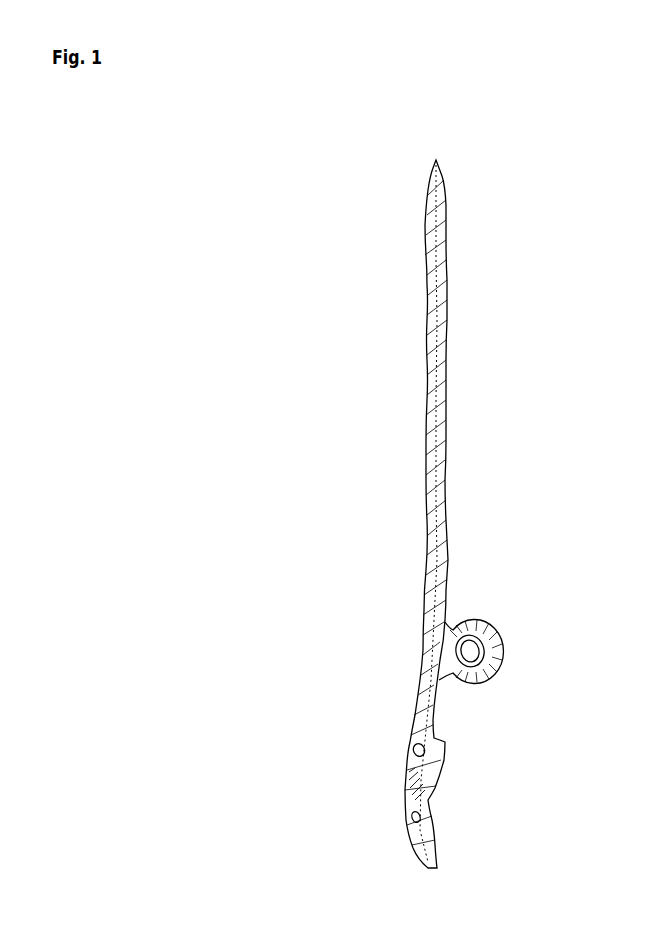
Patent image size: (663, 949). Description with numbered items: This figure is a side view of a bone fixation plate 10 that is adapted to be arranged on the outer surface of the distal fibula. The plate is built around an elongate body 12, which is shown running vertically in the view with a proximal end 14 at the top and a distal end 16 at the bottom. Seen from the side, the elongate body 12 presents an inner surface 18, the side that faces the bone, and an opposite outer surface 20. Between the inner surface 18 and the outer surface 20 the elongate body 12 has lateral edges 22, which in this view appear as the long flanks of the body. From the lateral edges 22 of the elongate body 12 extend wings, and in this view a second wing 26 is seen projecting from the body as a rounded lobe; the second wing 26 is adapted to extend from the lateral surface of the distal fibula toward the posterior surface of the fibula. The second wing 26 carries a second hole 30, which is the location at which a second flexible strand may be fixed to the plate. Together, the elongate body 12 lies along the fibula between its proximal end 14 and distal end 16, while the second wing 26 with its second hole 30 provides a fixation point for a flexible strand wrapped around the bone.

The bone fixation plate 10 is at (360, 162).
The elongate body 12 is at (445, 205).
The proximal end 14 is at (437, 158).
The distal end 16 is at (432, 872).
The inner surface 18 is at (447, 264).
The outer surface 20 is at (426, 264).
The lateral edges 22 is at (440, 345).
The second wing 26 is at (498, 648).
The second hole 30 is at (470, 656).